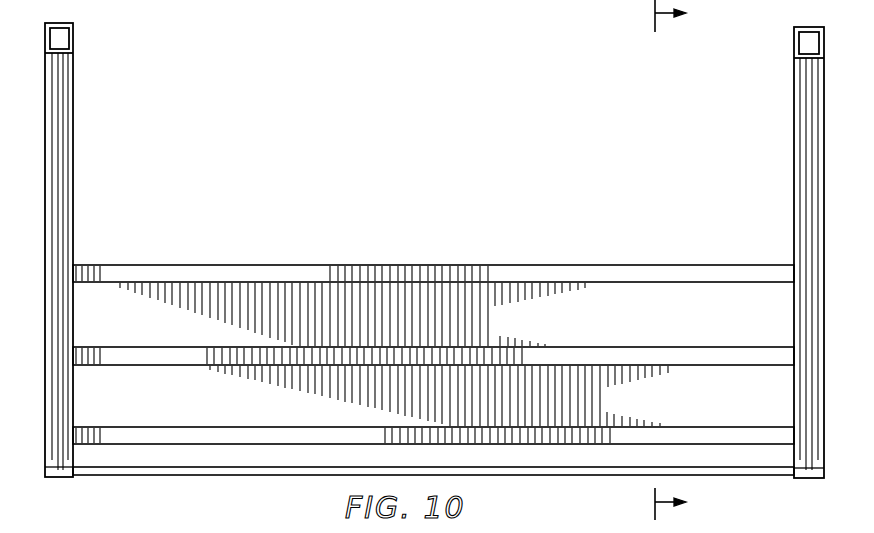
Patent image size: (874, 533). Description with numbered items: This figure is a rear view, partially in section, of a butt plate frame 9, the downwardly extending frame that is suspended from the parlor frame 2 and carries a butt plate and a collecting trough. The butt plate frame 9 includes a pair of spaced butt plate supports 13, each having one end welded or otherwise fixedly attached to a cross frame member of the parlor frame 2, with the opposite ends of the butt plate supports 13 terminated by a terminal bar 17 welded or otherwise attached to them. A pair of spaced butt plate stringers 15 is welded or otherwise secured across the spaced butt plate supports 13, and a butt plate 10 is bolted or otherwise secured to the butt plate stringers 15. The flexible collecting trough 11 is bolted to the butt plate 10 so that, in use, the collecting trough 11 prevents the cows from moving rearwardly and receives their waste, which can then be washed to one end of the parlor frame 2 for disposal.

The parlor frame 2 is at (82, 27).
The butt plate frame 9 is at (85, 206).
The butt plate support 13 is at (72, 240).
The butt plate stringer 15 is at (313, 272).
The butt plate 10 is at (660, 337).
The terminal bar 17 is at (240, 476).
The collecting trough 11 is at (636, 22).